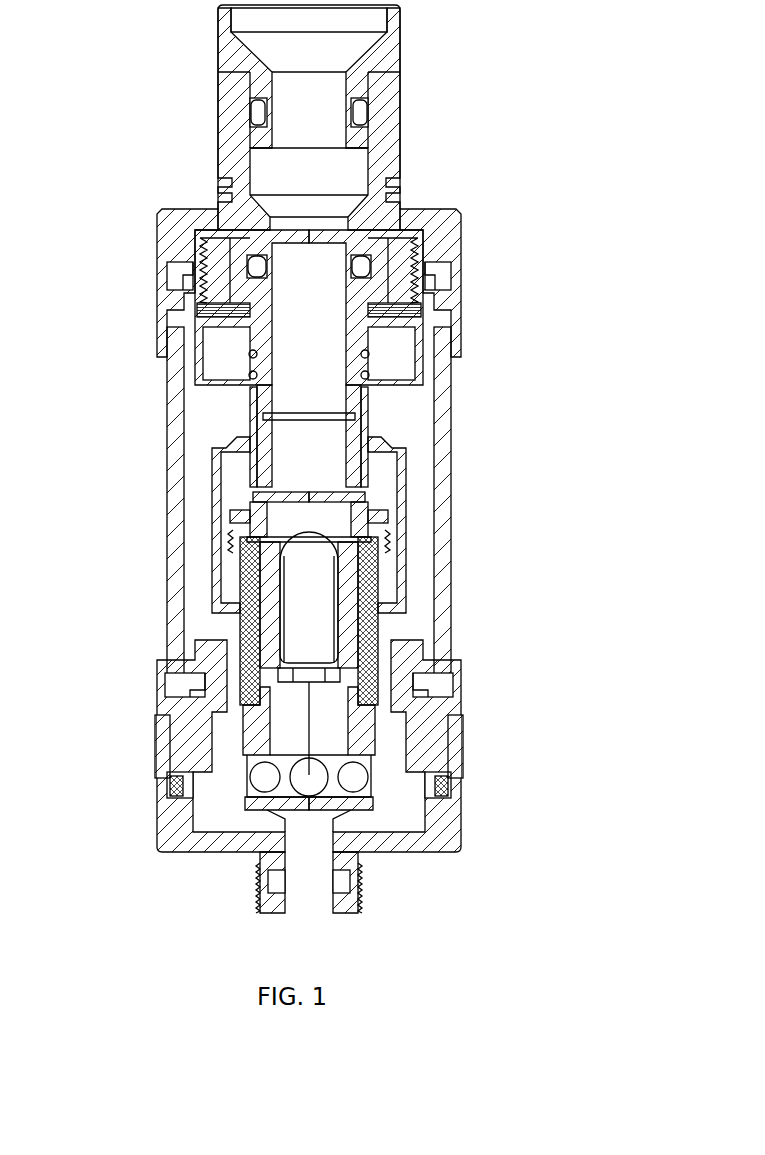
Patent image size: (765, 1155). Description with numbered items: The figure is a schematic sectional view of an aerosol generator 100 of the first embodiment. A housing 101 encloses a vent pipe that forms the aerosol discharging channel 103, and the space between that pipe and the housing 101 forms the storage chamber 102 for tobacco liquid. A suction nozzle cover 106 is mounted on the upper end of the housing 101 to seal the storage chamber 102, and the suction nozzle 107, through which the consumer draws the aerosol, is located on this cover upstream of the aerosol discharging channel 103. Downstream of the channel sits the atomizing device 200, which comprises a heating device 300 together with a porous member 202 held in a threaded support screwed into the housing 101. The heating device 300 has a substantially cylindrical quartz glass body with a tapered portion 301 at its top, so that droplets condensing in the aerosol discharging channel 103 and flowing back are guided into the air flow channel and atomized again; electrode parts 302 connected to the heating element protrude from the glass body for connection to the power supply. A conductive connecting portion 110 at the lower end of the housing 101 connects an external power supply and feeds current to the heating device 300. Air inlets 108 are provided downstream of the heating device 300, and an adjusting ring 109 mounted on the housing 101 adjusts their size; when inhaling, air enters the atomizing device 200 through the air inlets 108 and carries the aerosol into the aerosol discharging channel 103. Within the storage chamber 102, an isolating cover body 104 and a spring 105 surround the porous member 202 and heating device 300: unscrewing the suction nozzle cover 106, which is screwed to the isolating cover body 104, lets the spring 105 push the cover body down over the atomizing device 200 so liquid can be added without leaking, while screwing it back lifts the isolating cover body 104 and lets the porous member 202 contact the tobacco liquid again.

The aerosol generator 100 is at (440, 133).
The housing 101 is at (450, 383).
The storage chamber 102 is at (200, 417).
The aerosol discharging channel 103 is at (322, 332).
The isolating cover body 104 is at (405, 500).
The spring 105 is at (365, 403).
The suction nozzle cover 106 is at (160, 213).
The suction nozzle 107 is at (395, 33).
The air inlet 108 is at (453, 802).
The adjusting ring 109 is at (153, 757).
The conductive connecting portion 110 is at (257, 887).
The atomizing device 200 is at (232, 602).
The porous member 202 is at (355, 630).
The heating device 300 is at (345, 585).
The tapered portion 301 is at (262, 523).
The electrode part 302 is at (357, 780).